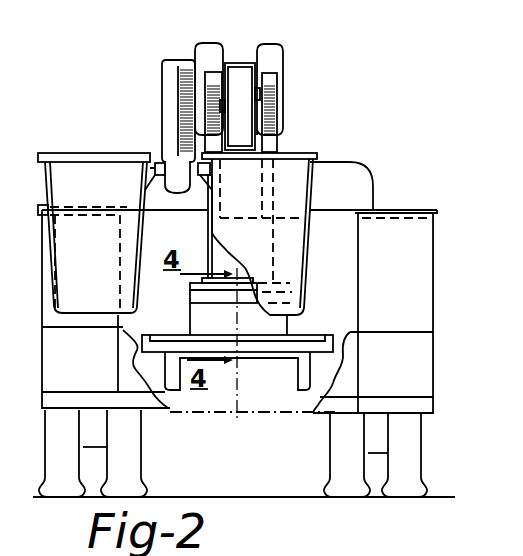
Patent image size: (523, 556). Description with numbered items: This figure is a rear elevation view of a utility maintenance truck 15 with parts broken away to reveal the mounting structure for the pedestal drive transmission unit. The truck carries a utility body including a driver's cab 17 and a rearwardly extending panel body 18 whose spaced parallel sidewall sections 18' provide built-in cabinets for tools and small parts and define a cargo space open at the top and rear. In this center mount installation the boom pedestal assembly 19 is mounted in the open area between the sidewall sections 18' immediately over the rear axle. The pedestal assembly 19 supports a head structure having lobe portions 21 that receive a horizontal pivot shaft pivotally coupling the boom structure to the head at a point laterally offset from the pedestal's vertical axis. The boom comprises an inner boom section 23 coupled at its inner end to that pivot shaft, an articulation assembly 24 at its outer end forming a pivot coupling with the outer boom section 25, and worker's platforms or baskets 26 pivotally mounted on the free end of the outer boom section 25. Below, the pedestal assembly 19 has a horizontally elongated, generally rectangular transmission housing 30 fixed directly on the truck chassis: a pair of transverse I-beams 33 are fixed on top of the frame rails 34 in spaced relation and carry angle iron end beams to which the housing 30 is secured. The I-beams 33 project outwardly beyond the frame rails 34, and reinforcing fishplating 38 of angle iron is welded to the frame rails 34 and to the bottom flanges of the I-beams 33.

The utility maintenance truck 15 is at (385, 197).
The driver's cab 17 is at (352, 162).
The panel body 18 is at (262, 371).
The sidewall sections 18' is at (258, 311).
The boom pedestal assembly 19 is at (206, 240).
The lobe portions 21 is at (206, 123).
The inner boom section 23 is at (241, 67).
The articulation assembly 24 is at (290, 52).
The outer boom section 25 is at (175, 100).
The worker's platforms or baskets 26 is at (78, 153).
The transmission housing 30 is at (184, 297).
The transverse I-beams 33 is at (142, 345).
The frame rails 34 is at (292, 394).
The reinforcing fishplating 38 is at (160, 368).